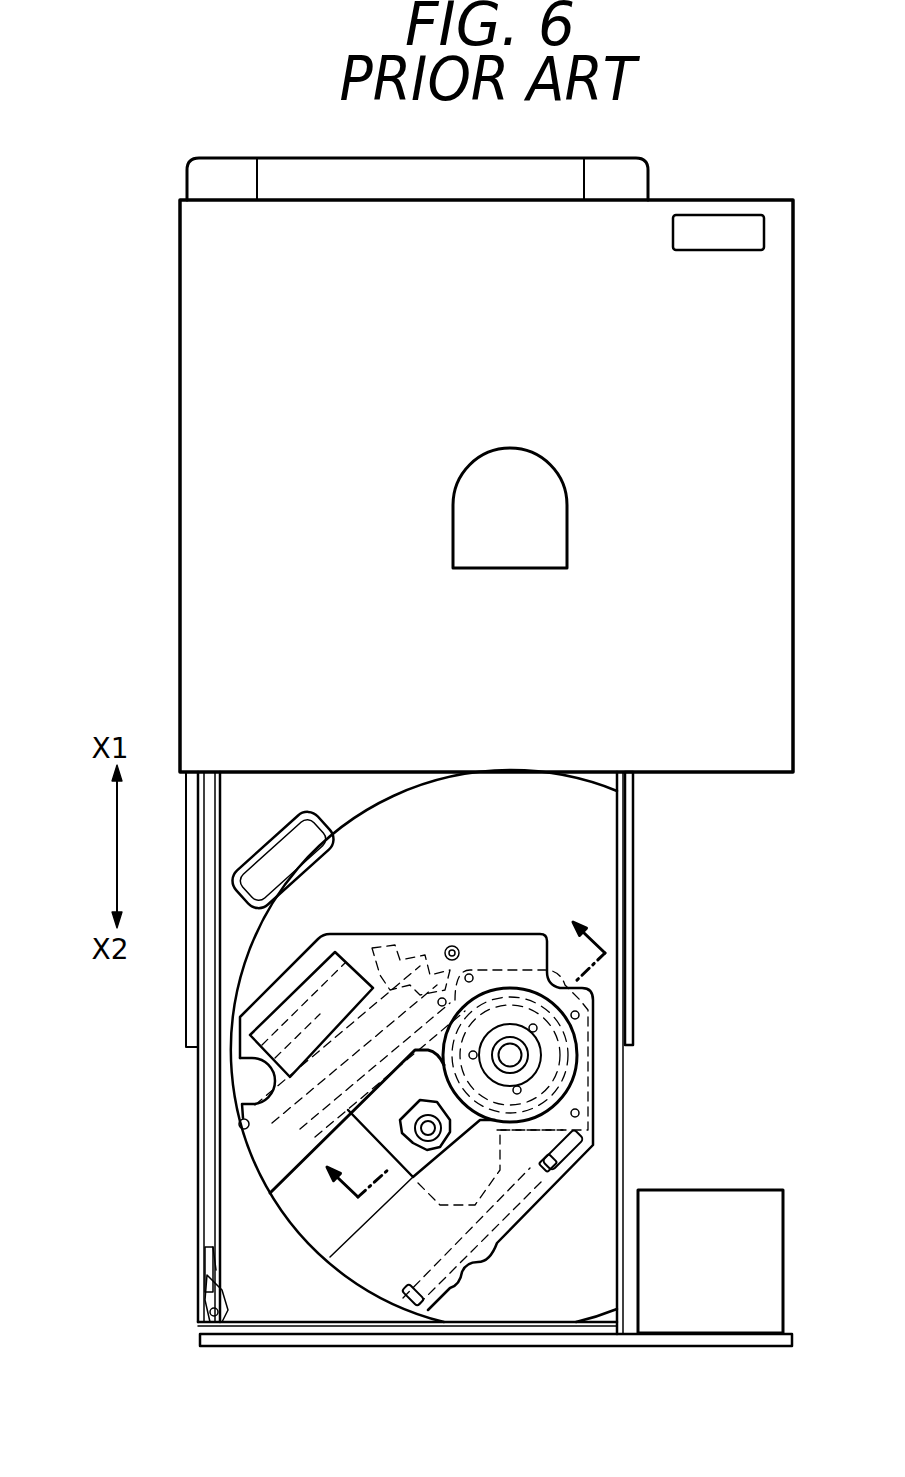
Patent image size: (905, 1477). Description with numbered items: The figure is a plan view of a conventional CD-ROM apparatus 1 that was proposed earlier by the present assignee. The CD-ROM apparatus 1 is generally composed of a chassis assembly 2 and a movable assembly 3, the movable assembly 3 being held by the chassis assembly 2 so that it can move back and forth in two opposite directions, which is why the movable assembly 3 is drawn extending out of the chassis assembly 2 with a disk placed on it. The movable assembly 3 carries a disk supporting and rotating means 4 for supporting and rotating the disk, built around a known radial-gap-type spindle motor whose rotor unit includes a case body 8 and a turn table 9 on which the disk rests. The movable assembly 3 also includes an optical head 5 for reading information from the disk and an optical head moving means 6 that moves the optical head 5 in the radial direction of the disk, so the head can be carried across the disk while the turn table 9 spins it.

The CD-ROM apparatus 1 is at (44, 164).
The chassis assembly 2 is at (165, 438).
The movable assembly 3 is at (183, 1172).
The disk supporting and rotating means 4 is at (607, 1023).
The optical head 5 is at (370, 1133).
The optical head moving means 6 is at (345, 940).
The case body 8 is at (498, 1003).
The turn table 9 is at (567, 1060).